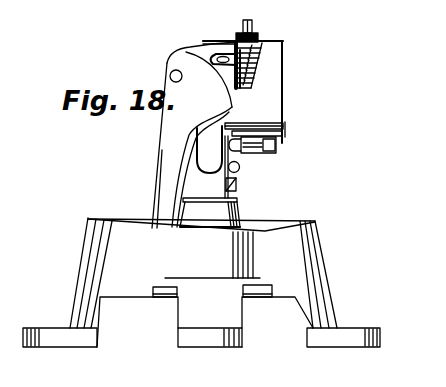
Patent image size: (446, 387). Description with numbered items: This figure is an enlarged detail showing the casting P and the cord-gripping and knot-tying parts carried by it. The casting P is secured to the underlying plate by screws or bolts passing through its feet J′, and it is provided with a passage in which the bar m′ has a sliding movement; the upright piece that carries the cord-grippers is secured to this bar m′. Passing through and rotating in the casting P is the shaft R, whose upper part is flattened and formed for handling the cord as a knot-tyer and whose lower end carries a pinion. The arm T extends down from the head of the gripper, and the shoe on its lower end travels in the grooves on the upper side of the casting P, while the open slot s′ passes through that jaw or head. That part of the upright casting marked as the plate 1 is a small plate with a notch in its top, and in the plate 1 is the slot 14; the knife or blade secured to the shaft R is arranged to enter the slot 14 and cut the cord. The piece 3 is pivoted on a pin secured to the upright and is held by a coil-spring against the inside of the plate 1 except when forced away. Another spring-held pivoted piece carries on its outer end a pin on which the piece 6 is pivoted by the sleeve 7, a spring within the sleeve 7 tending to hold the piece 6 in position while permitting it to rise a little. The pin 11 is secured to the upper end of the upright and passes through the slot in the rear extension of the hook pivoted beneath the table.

The arm T is at (146, 174).
The pivoted piece 3 is at (283, 43).
The slot 14 is at (287, 122).
The pin 11 is at (259, 30).
The open slot s′ is at (223, 39).
The plate 1 is at (278, 108).
The pivoted piece 6 is at (294, 133).
The sleeve 7 is at (271, 165).
The shaft R is at (236, 187).
The casting P is at (203, 272).
The bar m′ is at (165, 299).
The feet J′ is at (201, 329).